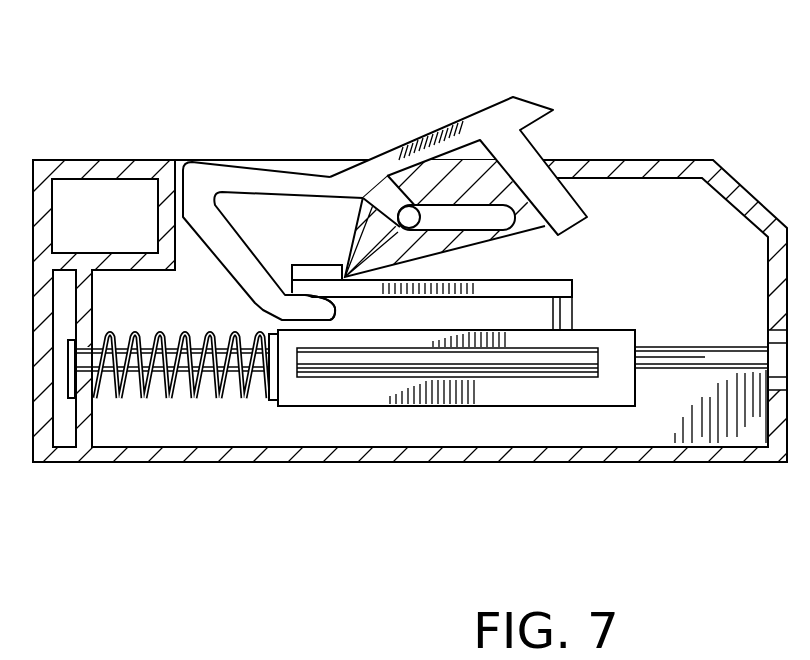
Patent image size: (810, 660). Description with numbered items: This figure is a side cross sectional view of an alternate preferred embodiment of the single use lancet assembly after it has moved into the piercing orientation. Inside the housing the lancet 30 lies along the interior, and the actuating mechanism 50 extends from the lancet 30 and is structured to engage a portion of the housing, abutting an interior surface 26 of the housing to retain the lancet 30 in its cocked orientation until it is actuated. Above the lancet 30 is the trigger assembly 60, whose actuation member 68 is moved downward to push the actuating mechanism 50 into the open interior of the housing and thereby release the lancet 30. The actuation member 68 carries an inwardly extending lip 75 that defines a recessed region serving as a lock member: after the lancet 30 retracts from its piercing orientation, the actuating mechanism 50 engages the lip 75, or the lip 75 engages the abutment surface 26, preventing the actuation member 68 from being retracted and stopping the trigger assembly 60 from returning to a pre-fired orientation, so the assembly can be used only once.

The interior surface 26 is at (347, 276).
The lancet 30 is at (484, 414).
The actuating mechanism 50 is at (567, 270).
The trigger assembly 60 is at (455, 103).
The actuation member 68 is at (225, 278).
The inwardly extending lip 75 is at (307, 312).